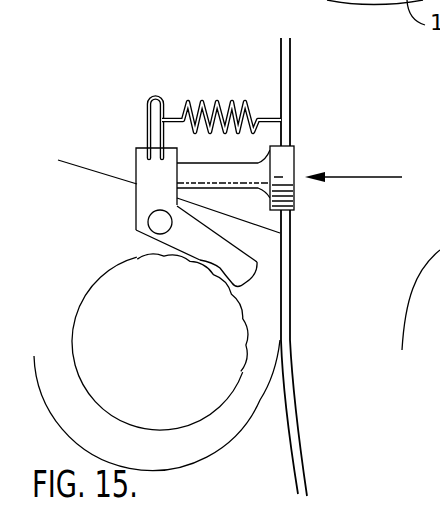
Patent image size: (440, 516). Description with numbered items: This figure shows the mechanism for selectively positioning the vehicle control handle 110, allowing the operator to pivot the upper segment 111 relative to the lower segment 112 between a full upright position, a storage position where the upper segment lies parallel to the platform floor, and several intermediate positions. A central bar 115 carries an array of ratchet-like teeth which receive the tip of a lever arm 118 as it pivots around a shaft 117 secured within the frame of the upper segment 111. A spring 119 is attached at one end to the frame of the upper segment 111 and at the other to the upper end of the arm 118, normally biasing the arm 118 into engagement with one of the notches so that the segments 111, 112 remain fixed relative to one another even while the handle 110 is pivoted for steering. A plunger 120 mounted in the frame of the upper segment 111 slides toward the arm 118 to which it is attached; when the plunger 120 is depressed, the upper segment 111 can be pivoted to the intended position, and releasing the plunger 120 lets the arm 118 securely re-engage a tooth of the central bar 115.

The control handle 110 is at (305, 131).
The upper segment 111 is at (292, 65).
The lower segment 112 is at (273, 423).
The central bar 115 is at (168, 340).
The shaft 117 is at (156, 223).
The lever arm 118 is at (243, 265).
The spring 119 is at (220, 97).
The plunger 120 is at (294, 197).